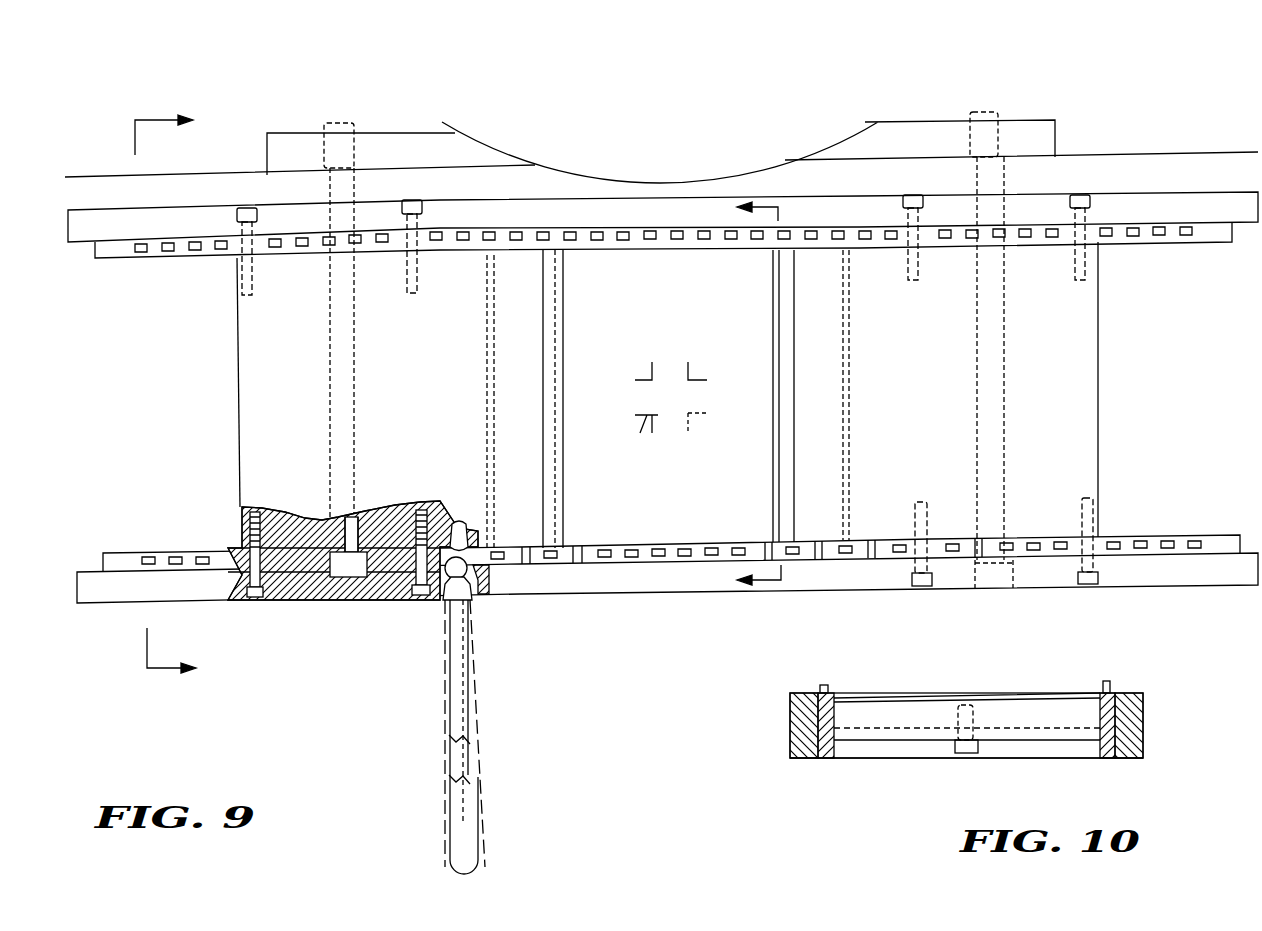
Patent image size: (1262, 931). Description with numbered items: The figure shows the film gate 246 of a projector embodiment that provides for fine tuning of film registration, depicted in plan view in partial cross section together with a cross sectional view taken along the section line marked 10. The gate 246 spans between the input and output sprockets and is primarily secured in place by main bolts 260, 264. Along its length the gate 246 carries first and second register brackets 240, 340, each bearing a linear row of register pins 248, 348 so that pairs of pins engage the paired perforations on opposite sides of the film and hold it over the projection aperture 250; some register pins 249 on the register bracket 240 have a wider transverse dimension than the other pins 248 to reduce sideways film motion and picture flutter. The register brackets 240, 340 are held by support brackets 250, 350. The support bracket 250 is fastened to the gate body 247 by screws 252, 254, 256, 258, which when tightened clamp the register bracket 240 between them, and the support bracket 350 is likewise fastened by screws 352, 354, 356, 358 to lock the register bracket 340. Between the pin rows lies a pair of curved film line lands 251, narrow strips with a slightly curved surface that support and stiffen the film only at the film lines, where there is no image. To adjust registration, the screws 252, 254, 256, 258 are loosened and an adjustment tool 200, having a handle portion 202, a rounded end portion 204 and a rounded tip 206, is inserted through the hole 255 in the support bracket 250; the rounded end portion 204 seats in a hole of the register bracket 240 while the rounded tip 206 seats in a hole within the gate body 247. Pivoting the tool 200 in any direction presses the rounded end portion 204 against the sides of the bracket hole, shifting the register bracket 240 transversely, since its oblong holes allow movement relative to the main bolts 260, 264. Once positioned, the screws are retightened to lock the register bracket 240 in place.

In FIG. 9, the section line 10- 10 is at (458, 399).
In FIG. 9, the adjustment tool 200 is at (490, 721).
In FIG. 9, the handle portion 202 is at (480, 644).
In FIG. 9, the rounded end portion 204 is at (442, 612).
In FIG. 9, the rounded tip 206 is at (460, 524).
In FIG. 9, the register bracket 240 is at (118, 556).
In FIG. 9, the gate 246 is at (1135, 130).
In FIG. 10, the gate 246 is at (772, 778).
In FIG. 9, the gate body 247 is at (283, 508).
In FIG. 9, the register pins 248 is at (177, 556).
In FIG. 10, the register pins 248 is at (1110, 681).
In FIG. 9, the register pins 249 is at (583, 523).
In FIG. 9, the support bracket 250 is at (85, 640).
In FIG. 10, the support bracket 250 is at (1143, 718).
In FIG. 9, the film line lands 251 is at (566, 352).
In FIG. 10, the film line lands 251 is at (1068, 690).
In FIG. 9, the screw 252 is at (241, 548).
In FIG. 9, the screw 254 is at (405, 597).
In FIG. 9, the hole 255 is at (493, 598).
In FIG. 9, the screw 256 is at (922, 588).
In FIG. 9, the screw 258 is at (1092, 583).
In FIG. 9, the main bolt 260 is at (345, 572).
In FIG. 9, the main bolt 264 is at (1005, 420).
In FIG. 9, the register bracket 340 is at (98, 262).
In FIG. 10, the register bracket 340 is at (835, 712).
In FIG. 9, the register pins 348 is at (165, 255).
In FIG. 10, the register pins 348 is at (826, 686).
In FIG. 9, the support bracket 350 is at (75, 228).
In FIG. 10, the support bracket 350 is at (795, 712).
In FIG. 9, the screw 352 is at (252, 190).
In FIG. 9, the screw 354 is at (422, 208).
In FIG. 9, the screw 356 is at (925, 180).
In FIG. 9, the screw 358 is at (1095, 195).